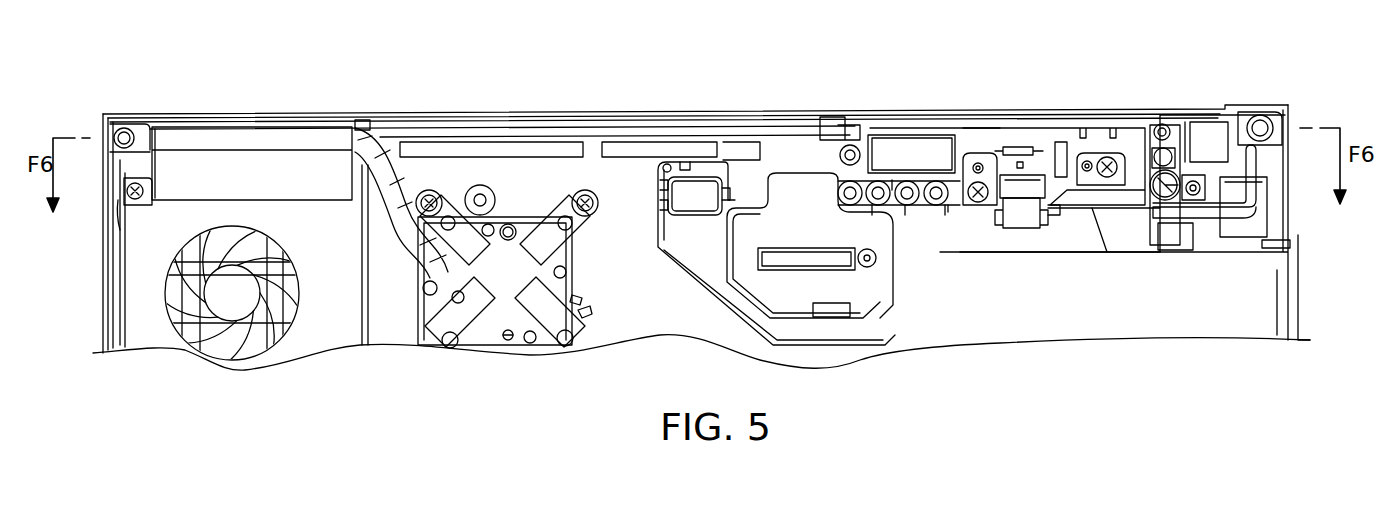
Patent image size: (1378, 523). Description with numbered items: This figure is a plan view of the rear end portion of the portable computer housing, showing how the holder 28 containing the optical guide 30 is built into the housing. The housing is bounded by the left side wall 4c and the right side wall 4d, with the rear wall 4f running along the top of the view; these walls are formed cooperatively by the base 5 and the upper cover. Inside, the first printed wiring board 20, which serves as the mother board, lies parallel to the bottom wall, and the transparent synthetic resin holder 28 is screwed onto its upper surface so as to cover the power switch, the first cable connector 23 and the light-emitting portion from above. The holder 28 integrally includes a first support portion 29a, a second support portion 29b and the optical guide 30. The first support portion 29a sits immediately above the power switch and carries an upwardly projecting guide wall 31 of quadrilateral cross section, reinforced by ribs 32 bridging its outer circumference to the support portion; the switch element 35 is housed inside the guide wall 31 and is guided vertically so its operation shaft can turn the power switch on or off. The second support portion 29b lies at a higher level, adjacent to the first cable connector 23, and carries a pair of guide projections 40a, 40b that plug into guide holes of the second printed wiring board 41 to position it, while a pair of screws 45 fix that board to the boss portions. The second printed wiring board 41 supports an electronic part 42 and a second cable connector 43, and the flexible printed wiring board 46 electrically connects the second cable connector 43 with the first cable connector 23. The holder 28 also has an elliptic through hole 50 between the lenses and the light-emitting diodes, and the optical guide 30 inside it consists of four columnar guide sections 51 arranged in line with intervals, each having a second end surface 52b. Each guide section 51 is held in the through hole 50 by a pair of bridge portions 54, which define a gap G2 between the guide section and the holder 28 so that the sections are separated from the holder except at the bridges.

The base 5 is at (193, 112).
The left side wall 4c is at (100, 288).
The right side wall 4d is at (1287, 218).
The rear wall 4f is at (365, 113).
The first printed wiring board 20 is at (541, 177).
The first cable connector 23 is at (1052, 222).
The holder 28 is at (731, 306).
The first support portion 29a is at (690, 233).
The second support portion 29b is at (1090, 208).
The optical guide 30 is at (943, 203).
The guide wall 31 is at (668, 222).
The ribs 32 is at (713, 187).
The switch element 35 is at (686, 200).
The guide projection 40a is at (978, 163).
The guide projection 40b is at (1087, 160).
The second printed wiring board 41 is at (1038, 140).
The electronic part 42 is at (1015, 148).
The second cable connector 43 is at (1015, 195).
The screws 45 is at (1109, 158).
The flexible printed wiring board 46 is at (1023, 215).
The through hole 50 is at (848, 142).
The guide sections 51 is at (936, 185).
The second end surface 52b is at (880, 180).
The bridge portions 54 is at (945, 207).
The gap G2 is at (896, 185).